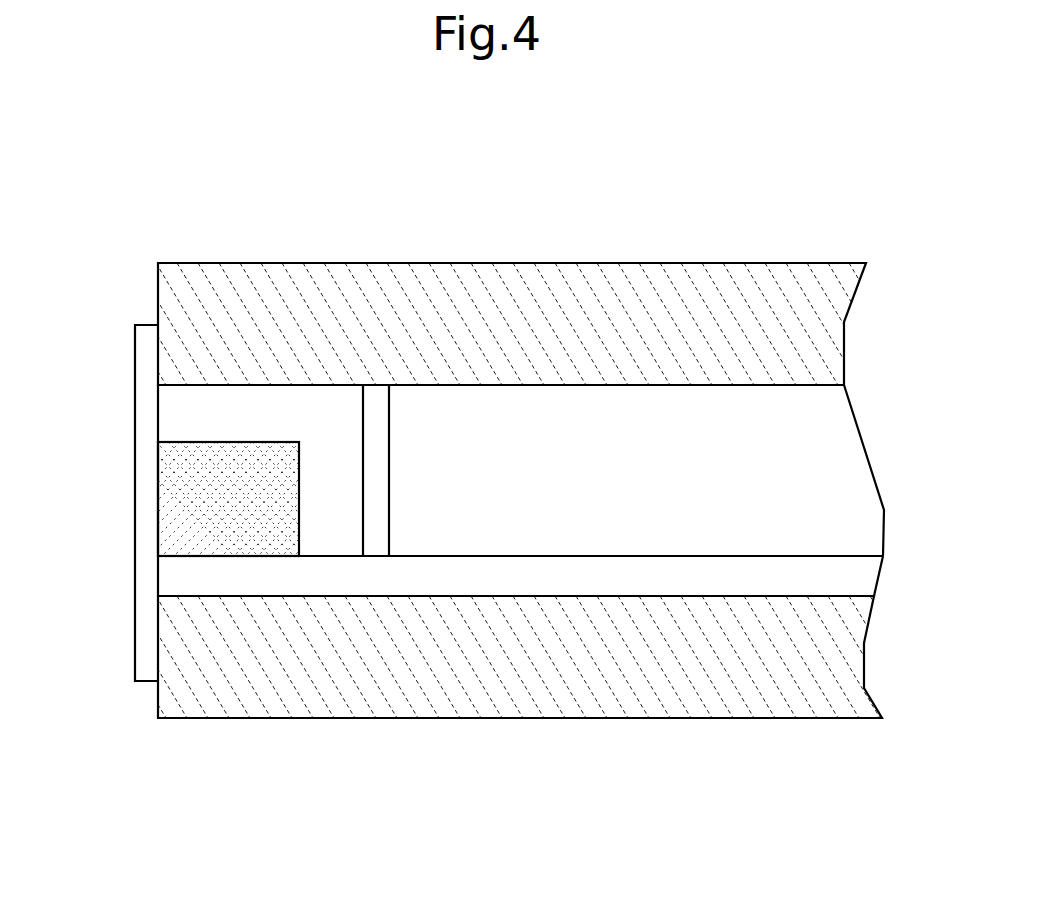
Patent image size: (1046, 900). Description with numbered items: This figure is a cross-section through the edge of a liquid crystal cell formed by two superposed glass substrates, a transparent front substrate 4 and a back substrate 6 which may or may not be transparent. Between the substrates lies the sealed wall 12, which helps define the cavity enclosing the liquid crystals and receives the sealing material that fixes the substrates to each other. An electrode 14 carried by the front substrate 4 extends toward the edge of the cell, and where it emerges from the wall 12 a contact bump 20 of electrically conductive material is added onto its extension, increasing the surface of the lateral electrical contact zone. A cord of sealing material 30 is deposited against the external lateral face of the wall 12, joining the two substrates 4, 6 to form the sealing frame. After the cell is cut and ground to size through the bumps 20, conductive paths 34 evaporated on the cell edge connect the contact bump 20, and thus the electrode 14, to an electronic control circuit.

The front substrate 4 is at (657, 290).
The back substrate 6 is at (835, 677).
The sealed wall 12 is at (521, 470).
The electrodes 14 is at (853, 582).
The contact bump 20 is at (234, 502).
The cord of sealing material 30 is at (318, 424).
The conductive paths 34 is at (147, 498).